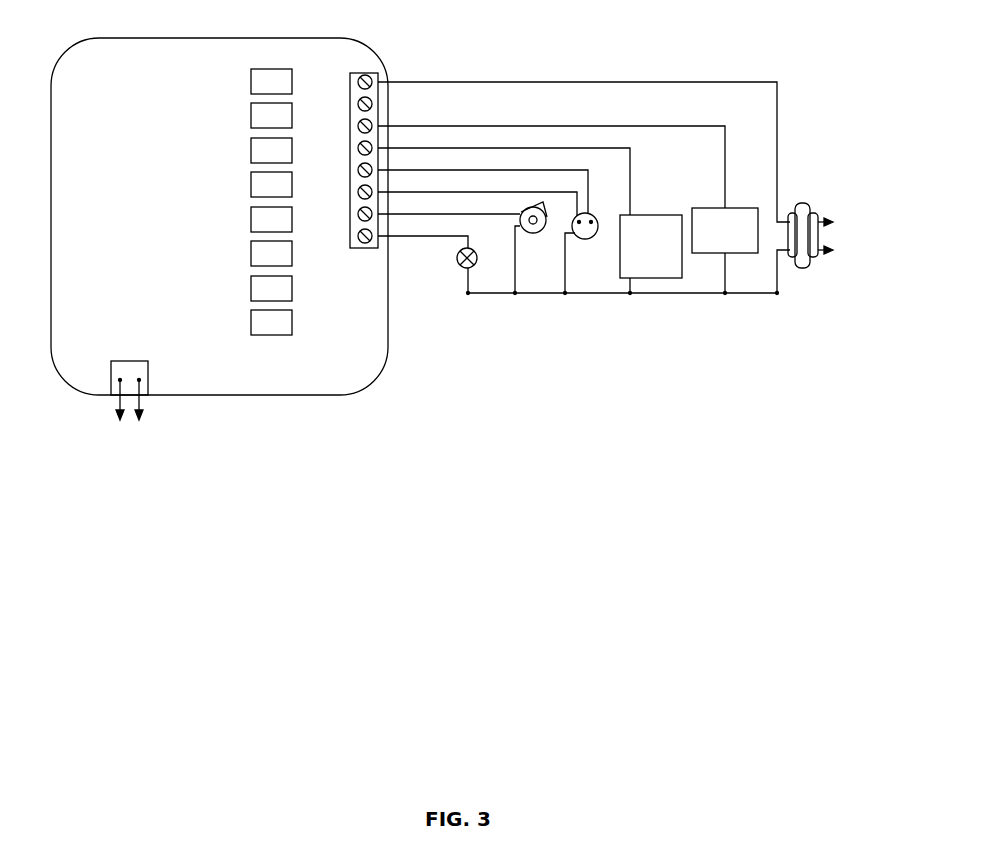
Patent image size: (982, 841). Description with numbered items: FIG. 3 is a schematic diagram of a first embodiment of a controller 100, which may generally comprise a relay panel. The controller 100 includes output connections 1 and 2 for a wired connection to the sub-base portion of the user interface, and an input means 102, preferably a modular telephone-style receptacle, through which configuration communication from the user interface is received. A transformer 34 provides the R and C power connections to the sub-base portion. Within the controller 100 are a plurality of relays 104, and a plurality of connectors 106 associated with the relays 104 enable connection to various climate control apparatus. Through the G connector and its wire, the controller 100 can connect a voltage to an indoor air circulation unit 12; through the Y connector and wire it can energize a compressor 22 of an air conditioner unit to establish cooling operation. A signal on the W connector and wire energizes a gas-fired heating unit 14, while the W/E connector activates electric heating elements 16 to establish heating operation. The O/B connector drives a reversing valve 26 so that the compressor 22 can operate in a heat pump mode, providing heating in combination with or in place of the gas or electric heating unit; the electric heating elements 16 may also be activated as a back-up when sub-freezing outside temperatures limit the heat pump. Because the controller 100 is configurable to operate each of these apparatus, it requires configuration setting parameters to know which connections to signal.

The controller 100 is at (293, 396).
The input means 102 is at (148, 385).
The relays 104 is at (303, 276).
The connectors 106 is at (376, 253).
The output connection 1 is at (120, 409).
The output connection 2 is at (138, 409).
The indoor air circulation unit 12 is at (538, 233).
The gas-fired heating unit 14 is at (650, 278).
The electric heating elements 16 is at (706, 253).
The compressor 22 is at (592, 238).
The reversing valve 26 is at (472, 266).
The transformer 34 is at (802, 268).